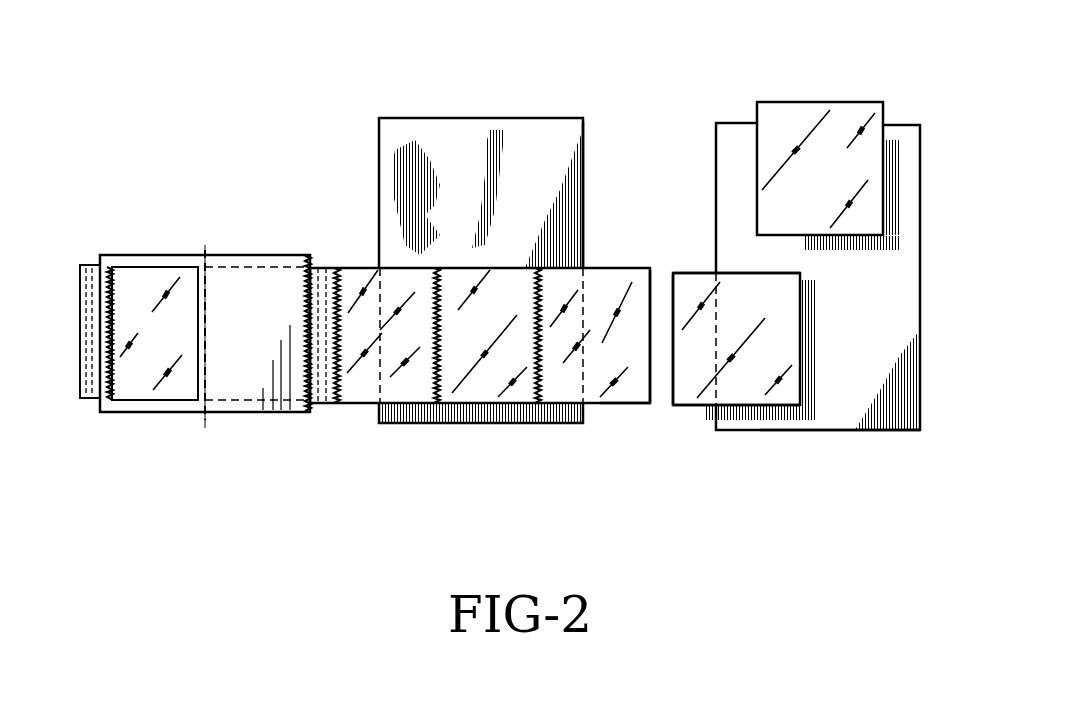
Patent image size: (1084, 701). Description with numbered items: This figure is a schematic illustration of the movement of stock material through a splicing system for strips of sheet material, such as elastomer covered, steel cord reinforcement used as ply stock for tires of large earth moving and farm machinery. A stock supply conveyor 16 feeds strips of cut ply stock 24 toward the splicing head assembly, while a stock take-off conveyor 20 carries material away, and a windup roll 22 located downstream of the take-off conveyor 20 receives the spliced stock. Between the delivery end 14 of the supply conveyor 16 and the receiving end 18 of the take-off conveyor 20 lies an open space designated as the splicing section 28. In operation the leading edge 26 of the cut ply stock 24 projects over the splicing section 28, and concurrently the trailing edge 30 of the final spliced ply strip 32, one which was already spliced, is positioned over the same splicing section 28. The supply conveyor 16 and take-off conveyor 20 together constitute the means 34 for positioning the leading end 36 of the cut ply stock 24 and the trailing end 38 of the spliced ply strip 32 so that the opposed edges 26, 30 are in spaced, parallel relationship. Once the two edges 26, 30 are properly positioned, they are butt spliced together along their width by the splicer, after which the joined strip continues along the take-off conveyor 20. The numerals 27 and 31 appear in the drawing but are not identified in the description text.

The delivery end 14 is at (716, 152).
The stock supply conveyor 16 is at (848, 378).
The receiving end 18 is at (585, 180).
The stock take-off conveyor 20 is at (457, 128).
The windup roll 22 is at (252, 290).
The cut ply stock 24 is at (843, 113).
The leading edge 26 is at (668, 287).
The top edge 27 is at (680, 272).
The splicing section 28 is at (698, 413).
The trailing edge 30 is at (655, 388).
The end edge 31 is at (648, 270).
The spliced ply strip 32 is at (367, 272).
The positioning means 34 is at (522, 106).
The leading end 36 is at (688, 350).
The trailing end 38 is at (633, 323).